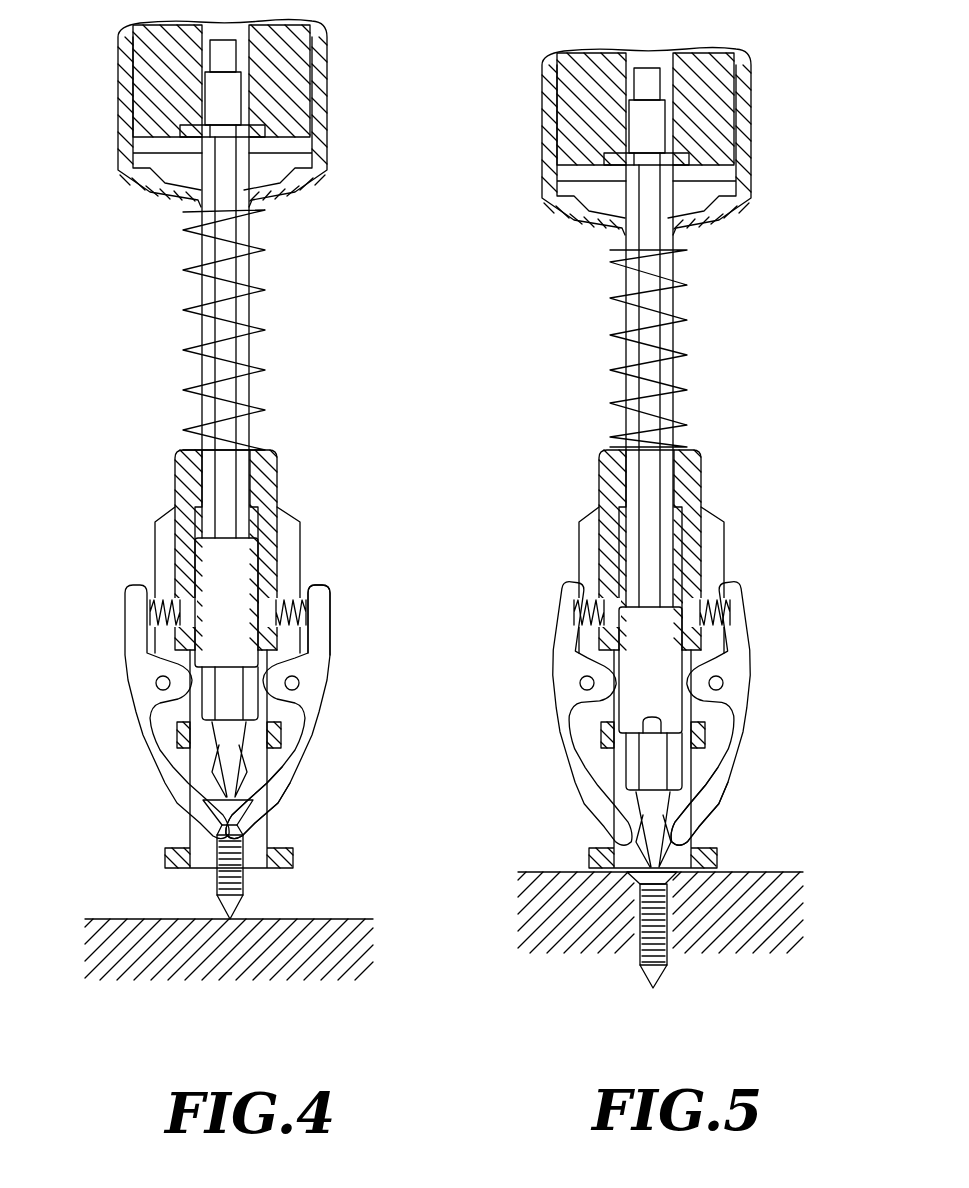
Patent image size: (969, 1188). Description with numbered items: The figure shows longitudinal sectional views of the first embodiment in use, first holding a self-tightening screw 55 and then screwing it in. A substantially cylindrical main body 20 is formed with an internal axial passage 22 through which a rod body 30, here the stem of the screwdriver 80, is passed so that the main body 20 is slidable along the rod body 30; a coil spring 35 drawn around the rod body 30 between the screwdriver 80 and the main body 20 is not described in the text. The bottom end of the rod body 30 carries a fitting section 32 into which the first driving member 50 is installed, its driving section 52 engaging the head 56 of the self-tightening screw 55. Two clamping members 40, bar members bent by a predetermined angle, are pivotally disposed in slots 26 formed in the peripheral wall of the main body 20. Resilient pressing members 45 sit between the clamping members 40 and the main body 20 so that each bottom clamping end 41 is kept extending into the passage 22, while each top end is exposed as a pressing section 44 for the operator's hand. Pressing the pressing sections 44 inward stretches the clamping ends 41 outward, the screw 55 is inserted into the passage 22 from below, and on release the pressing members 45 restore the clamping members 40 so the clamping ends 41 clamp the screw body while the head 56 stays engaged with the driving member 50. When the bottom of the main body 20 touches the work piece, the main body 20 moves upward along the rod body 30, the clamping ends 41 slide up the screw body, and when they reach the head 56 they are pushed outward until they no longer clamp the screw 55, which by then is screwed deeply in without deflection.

In FIG. 4, the screwdriver 80 is at (345, 82).
In FIG. 5, the screwdriver 80 is at (772, 130).
In FIG. 4, the compression spring 35 is at (186, 311).
In FIG. 4, the rod body 30 is at (226, 337).
In FIG. 5, the rod body 30 is at (655, 335).
In FIG. 4, the main body 20 is at (312, 540).
In FIG. 5, the main body 20 is at (715, 500).
In FIG. 4, the pressing member 45 is at (170, 600).
In FIG. 4, the fitting section 32 is at (252, 575).
In FIG. 4, the clamping member 40 is at (342, 615).
In FIG. 5, the clamping member 40 is at (750, 605).
In FIG. 4, the pressing section 44 is at (318, 618).
In FIG. 4, the slot 26 is at (317, 698).
In FIG. 4, the first driving member 50 is at (212, 703).
In FIG. 5, the first driving member 50 is at (645, 775).
In FIG. 4, the driving section 52 is at (219, 742).
In FIG. 4, the internal axial passage 22 is at (253, 770).
In FIG. 4, the head 56 is at (220, 803).
In FIG. 5, the head 56 is at (645, 878).
In FIG. 4, the clamping end 41 is at (253, 825).
In FIG. 5, the clamping end 41 is at (693, 820).
In FIG. 4, the self-tightening screw 55 is at (207, 859).
In FIG. 5, the self-tightening screw 55 is at (630, 918).